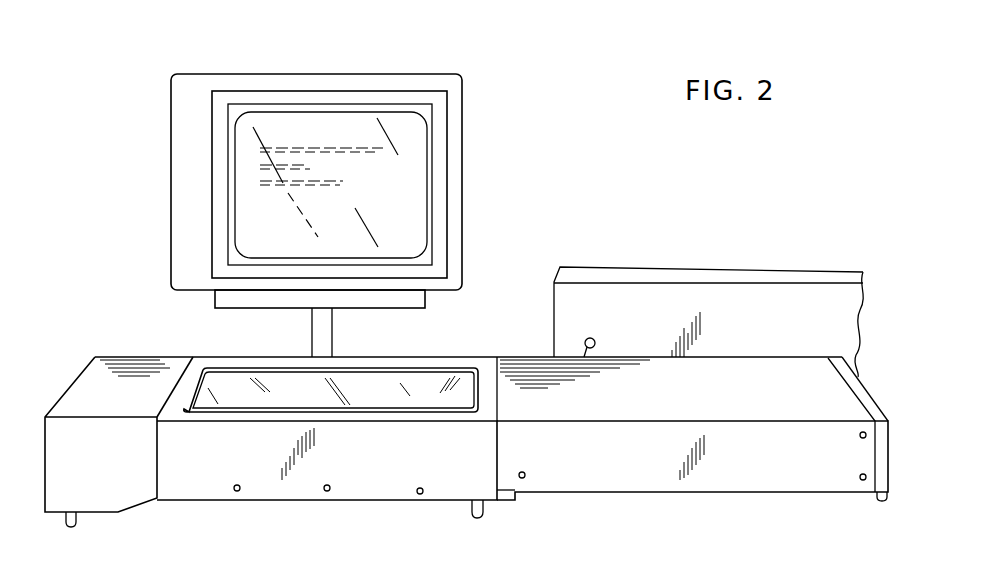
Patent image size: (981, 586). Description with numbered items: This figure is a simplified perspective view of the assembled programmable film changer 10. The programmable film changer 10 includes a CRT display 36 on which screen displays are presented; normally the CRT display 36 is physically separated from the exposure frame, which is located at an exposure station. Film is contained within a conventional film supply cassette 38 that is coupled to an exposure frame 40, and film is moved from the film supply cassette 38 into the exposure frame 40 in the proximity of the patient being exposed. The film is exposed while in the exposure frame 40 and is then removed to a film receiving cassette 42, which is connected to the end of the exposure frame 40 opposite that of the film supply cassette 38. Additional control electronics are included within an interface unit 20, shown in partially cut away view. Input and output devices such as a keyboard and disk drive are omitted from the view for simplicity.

The programmable film changer 10 is at (478, 143).
The interface unit 20 is at (717, 295).
The CRT display 36 is at (400, 74).
The film supply cassette 38 is at (740, 482).
The exposure frame 40 is at (308, 493).
The film receiving cassette 42 is at (118, 365).